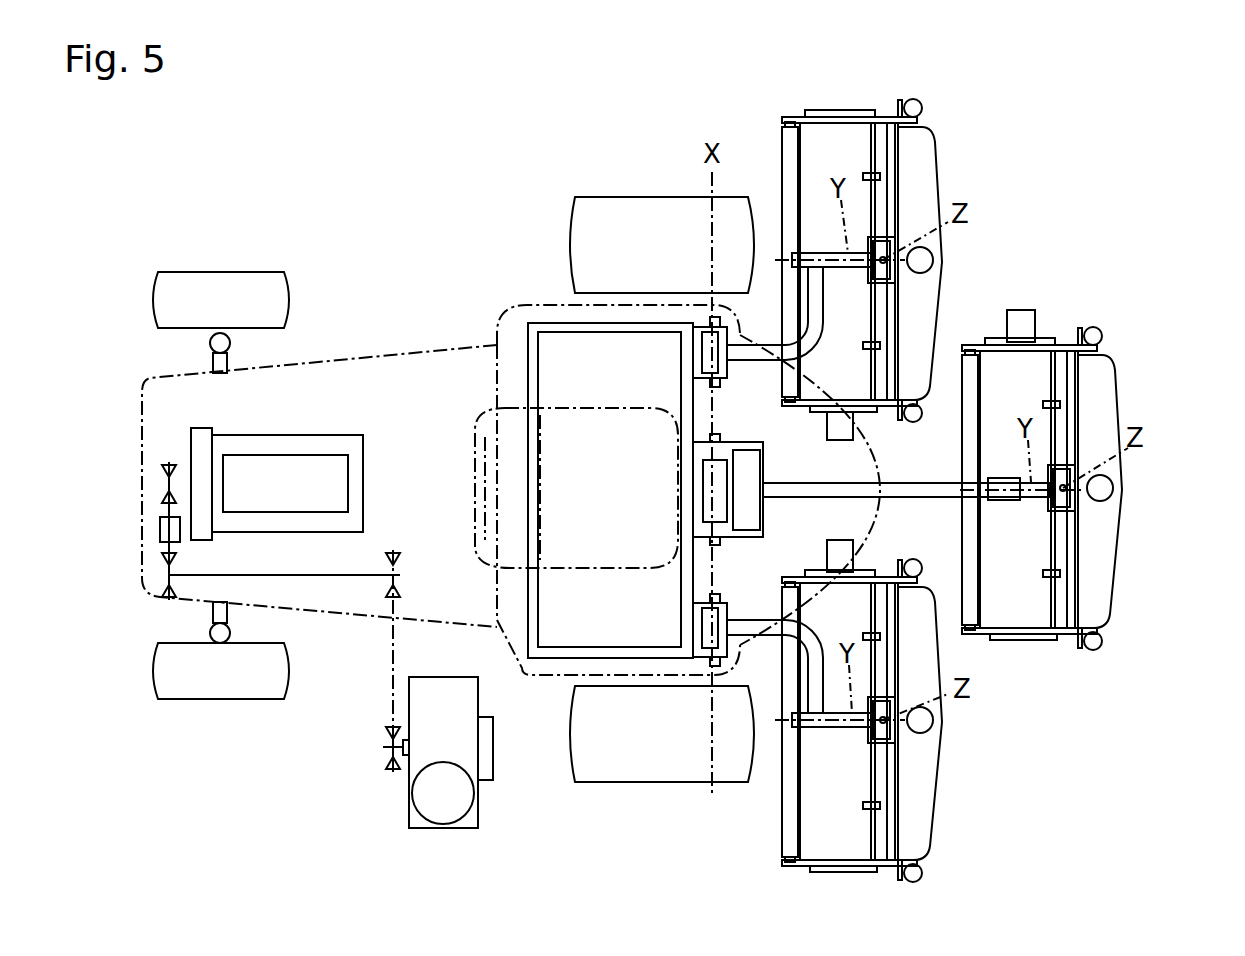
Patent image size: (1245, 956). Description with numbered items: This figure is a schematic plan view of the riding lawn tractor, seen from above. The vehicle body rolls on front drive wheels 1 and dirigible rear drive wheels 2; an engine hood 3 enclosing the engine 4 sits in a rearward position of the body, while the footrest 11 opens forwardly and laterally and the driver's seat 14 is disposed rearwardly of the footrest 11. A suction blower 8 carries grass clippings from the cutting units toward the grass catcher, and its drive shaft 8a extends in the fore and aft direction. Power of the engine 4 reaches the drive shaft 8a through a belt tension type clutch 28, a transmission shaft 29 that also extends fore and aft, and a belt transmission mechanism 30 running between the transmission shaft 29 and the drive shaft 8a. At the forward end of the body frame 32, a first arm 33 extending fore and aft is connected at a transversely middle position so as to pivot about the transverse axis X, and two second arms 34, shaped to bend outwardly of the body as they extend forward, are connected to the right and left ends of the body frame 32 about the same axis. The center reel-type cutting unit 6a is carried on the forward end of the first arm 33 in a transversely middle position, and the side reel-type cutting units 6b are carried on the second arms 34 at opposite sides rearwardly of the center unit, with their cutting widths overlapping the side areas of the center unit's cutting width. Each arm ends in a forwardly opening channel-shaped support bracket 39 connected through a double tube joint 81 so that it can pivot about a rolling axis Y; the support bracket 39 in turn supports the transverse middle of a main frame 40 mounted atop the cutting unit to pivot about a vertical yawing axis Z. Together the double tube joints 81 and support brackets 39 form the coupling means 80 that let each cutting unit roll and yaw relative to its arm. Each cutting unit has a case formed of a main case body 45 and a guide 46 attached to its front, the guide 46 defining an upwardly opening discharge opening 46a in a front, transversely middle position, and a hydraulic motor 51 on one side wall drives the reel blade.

The front drive wheel 1 is at (614, 210).
The rear drive wheel 2 is at (220, 290).
The engine hood 3 is at (397, 350).
The engine 4 is at (279, 448).
The center reel-type cutting unit 6a is at (1040, 658).
The side reel-type cutting unit 6b is at (777, 118).
The suction blower 8 is at (478, 812).
The drive shaft 8a is at (386, 750).
The footrest 11 is at (697, 300).
The driver's seat 14 is at (472, 490).
The belt tension type clutch 28 is at (160, 530).
The transmission shaft 29 is at (354, 578).
The belt transmission mechanism 30 is at (388, 670).
The body frame 32 is at (630, 325).
The first arm 33 is at (905, 488).
The second arm 34 is at (755, 360).
The support bracket 39 is at (870, 283).
The main frame 40 is at (893, 317).
The main case body 45 is at (825, 137).
The guide 46 is at (920, 183).
The discharge opening 46a is at (920, 260).
The hydraulic motor 51 is at (828, 440).
The coupling means 80 is at (857, 226).
The double tube joint 81 is at (843, 253).